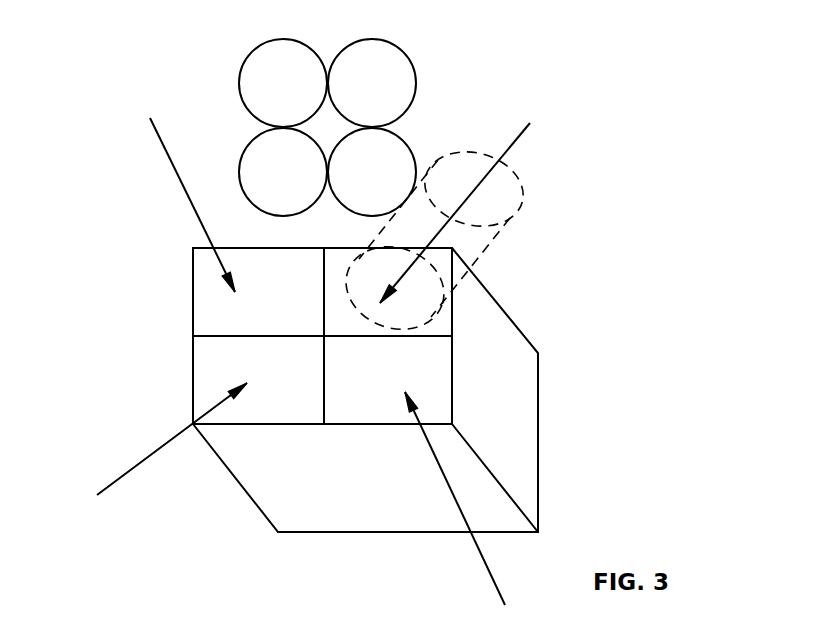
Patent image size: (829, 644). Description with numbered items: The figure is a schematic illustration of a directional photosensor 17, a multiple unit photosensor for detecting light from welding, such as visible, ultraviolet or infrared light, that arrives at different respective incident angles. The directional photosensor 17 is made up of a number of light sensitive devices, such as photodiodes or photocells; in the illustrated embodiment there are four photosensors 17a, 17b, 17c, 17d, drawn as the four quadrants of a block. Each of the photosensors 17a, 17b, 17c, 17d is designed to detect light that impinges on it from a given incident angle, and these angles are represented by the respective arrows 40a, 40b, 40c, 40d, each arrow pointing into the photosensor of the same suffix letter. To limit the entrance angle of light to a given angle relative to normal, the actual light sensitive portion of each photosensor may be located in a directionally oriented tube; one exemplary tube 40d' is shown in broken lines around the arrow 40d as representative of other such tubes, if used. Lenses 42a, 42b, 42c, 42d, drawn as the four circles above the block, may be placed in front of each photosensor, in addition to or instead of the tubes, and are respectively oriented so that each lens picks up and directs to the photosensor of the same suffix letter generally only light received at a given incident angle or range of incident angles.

The directional photosensor 17 is at (162, 238).
The photosensor 17a is at (193, 293).
The photosensor 17b is at (193, 373).
The photosensor 17c is at (432, 373).
The photosensor 17d is at (440, 292).
The lens 42a is at (245, 60).
The lens 42b is at (238, 157).
The lens 42c is at (423, 165).
The lens 42d is at (410, 63).
The arrow 40a is at (165, 153).
The arrow 40b is at (128, 475).
The arrow 40c is at (483, 563).
The arrow 40d is at (497, 185).
The tube 40d' is at (499, 238).